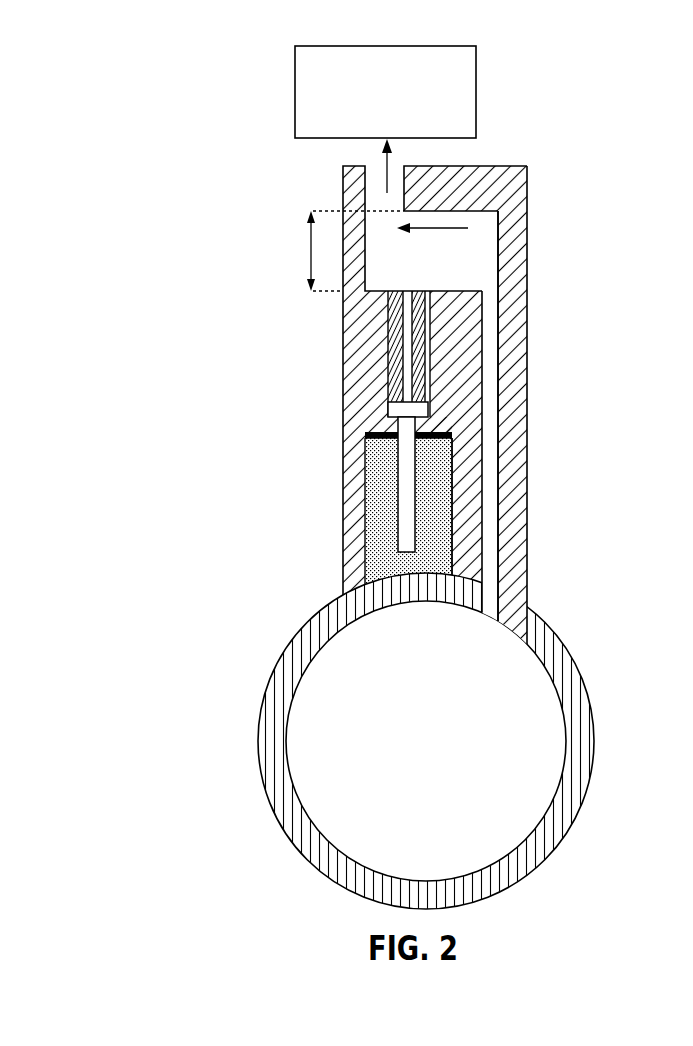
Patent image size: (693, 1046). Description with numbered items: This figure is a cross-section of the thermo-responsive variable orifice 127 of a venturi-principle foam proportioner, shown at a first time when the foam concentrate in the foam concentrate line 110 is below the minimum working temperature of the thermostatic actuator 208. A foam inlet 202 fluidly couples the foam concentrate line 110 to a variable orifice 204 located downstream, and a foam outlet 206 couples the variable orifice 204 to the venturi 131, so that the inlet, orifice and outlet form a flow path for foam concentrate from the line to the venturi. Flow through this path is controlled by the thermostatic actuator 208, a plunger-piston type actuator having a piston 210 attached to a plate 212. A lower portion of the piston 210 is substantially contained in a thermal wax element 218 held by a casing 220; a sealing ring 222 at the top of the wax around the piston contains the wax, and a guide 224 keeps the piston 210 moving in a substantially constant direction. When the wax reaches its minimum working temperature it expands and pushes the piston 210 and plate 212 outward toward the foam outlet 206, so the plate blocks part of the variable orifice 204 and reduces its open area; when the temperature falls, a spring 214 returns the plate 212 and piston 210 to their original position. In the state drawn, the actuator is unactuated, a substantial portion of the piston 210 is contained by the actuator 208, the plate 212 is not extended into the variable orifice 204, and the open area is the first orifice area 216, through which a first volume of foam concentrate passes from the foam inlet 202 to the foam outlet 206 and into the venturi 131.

The foam concentrate line 110 is at (305, 733).
The thermo-responsive variable orifice 127 is at (168, 149).
The venturi 131 is at (476, 88).
The foam inlet 202 is at (490, 575).
The variable orifice 204 is at (480, 262).
The foam outlet 206 is at (397, 170).
The thermostatic actuator 208 is at (192, 495).
The piston 210 is at (398, 503).
The plate 212 is at (407, 327).
The spring 214 is at (398, 400).
The orifice area 216 is at (330, 251).
The thermal wax element 218 is at (374, 556).
The casing 220 is at (467, 485).
The sealing ring 222 is at (368, 435).
The guide 224 is at (443, 423).